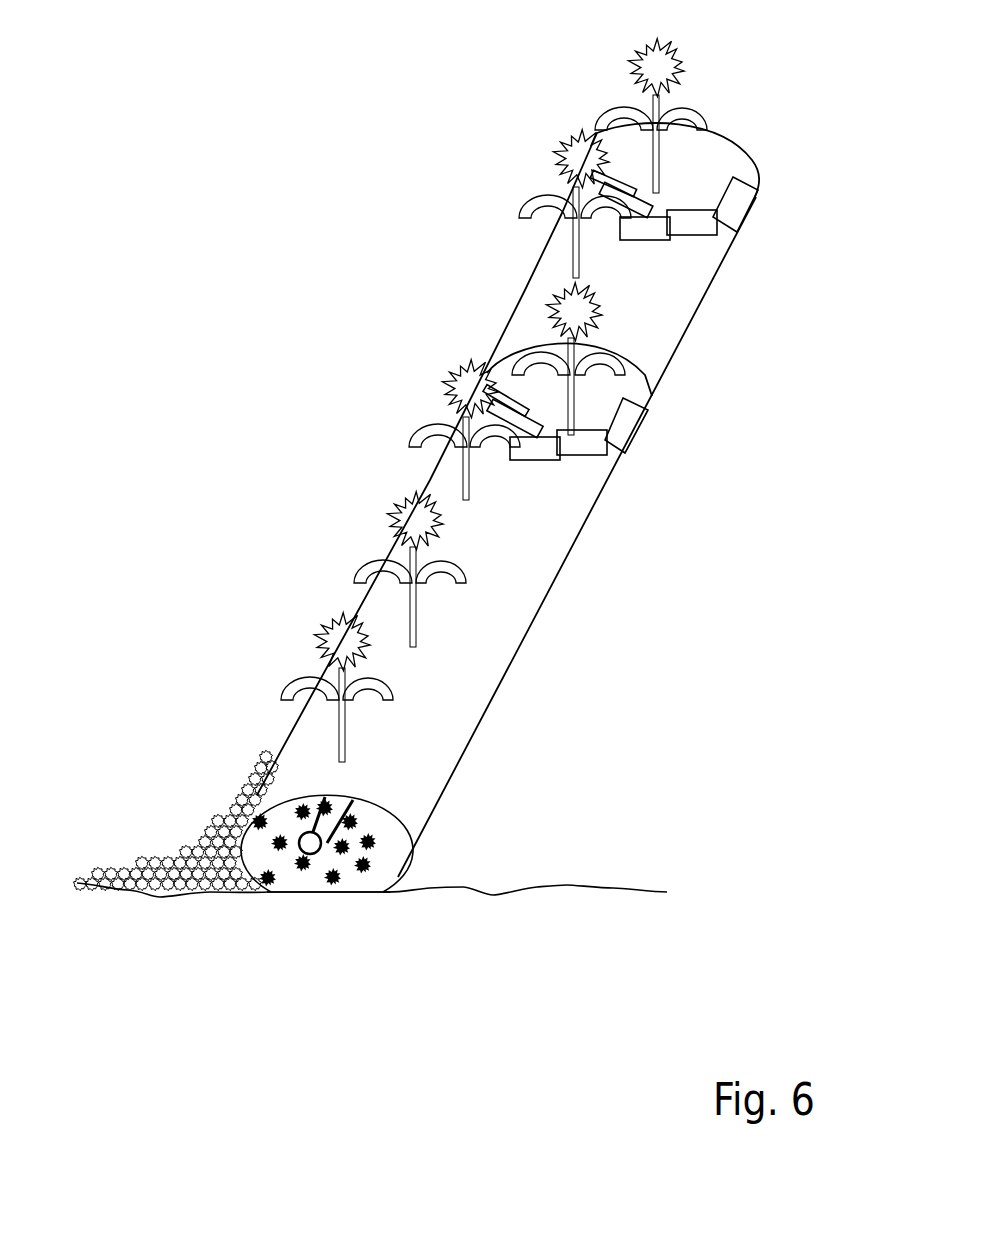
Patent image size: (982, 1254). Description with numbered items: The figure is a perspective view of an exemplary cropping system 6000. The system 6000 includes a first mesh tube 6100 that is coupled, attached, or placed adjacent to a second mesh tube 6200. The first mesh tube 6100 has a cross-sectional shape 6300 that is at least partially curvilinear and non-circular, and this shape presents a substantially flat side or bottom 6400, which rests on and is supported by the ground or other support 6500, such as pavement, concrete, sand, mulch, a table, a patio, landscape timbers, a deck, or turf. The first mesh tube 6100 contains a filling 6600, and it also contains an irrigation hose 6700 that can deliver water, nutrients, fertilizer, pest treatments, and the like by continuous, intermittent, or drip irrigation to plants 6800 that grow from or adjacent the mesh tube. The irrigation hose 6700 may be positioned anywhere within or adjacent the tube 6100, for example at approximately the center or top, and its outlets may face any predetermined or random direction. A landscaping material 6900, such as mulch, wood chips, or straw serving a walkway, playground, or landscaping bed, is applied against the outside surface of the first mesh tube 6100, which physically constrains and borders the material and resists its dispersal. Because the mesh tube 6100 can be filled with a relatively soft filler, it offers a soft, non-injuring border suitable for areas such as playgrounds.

The cropping system 6000 is at (235, 240).
The first mesh tube 6100 is at (517, 586).
The second mesh tube 6200 is at (648, 322).
The cross-sectional shape 6300 is at (393, 877).
The substantially flat side or bottom 6400 is at (307, 903).
The ground or other support 6500 is at (555, 892).
The filling 6600 is at (380, 848).
The irrigation hose 6700 is at (297, 833).
The plants 6800 is at (420, 530).
The landscaping material 6900 is at (190, 823).